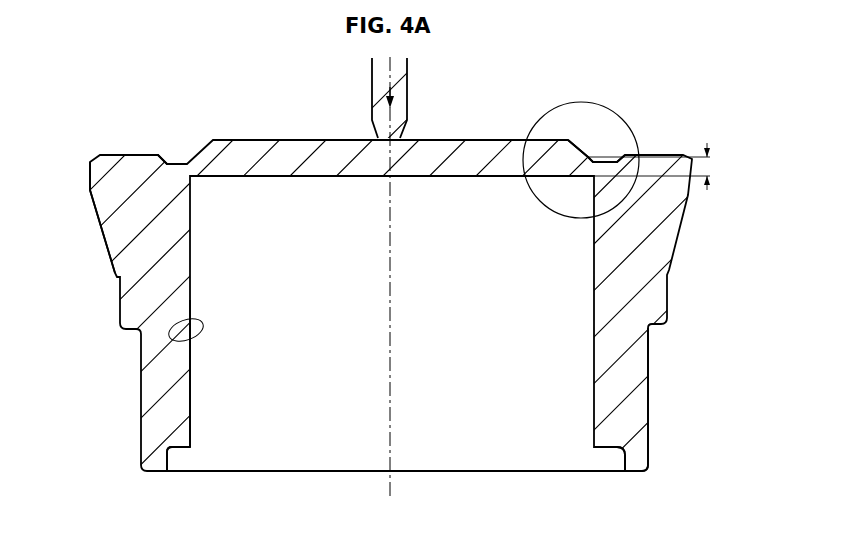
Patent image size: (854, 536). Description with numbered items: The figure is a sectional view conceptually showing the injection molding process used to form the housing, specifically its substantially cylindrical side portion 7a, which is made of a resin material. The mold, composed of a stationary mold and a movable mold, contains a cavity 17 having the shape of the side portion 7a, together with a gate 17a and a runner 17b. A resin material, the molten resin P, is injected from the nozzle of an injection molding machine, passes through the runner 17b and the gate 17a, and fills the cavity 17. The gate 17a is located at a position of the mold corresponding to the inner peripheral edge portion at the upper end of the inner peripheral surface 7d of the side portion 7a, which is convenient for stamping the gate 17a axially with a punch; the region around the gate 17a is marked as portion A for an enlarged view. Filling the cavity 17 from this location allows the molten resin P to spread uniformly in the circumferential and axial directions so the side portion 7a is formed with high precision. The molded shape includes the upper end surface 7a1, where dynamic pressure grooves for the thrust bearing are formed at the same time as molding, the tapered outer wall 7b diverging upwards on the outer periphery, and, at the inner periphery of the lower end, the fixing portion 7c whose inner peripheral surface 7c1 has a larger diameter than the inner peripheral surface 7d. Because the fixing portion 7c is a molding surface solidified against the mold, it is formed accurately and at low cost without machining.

The cavity 17 is at (667, 301).
The gate 17a is at (588, 166).
The runner 17b is at (478, 152).
The side portion 7a is at (625, 378).
The upper end surface 7a1 is at (139, 154).
The tapered outer wall 7b is at (103, 251).
The fixing portion 7c is at (637, 455).
The inner peripheral surface of the fixing portion 7c1 is at (615, 463).
The inner peripheral surface 7d is at (172, 344).
The resin material (molten resin) P is at (385, 82).
The portion A is at (632, 131).